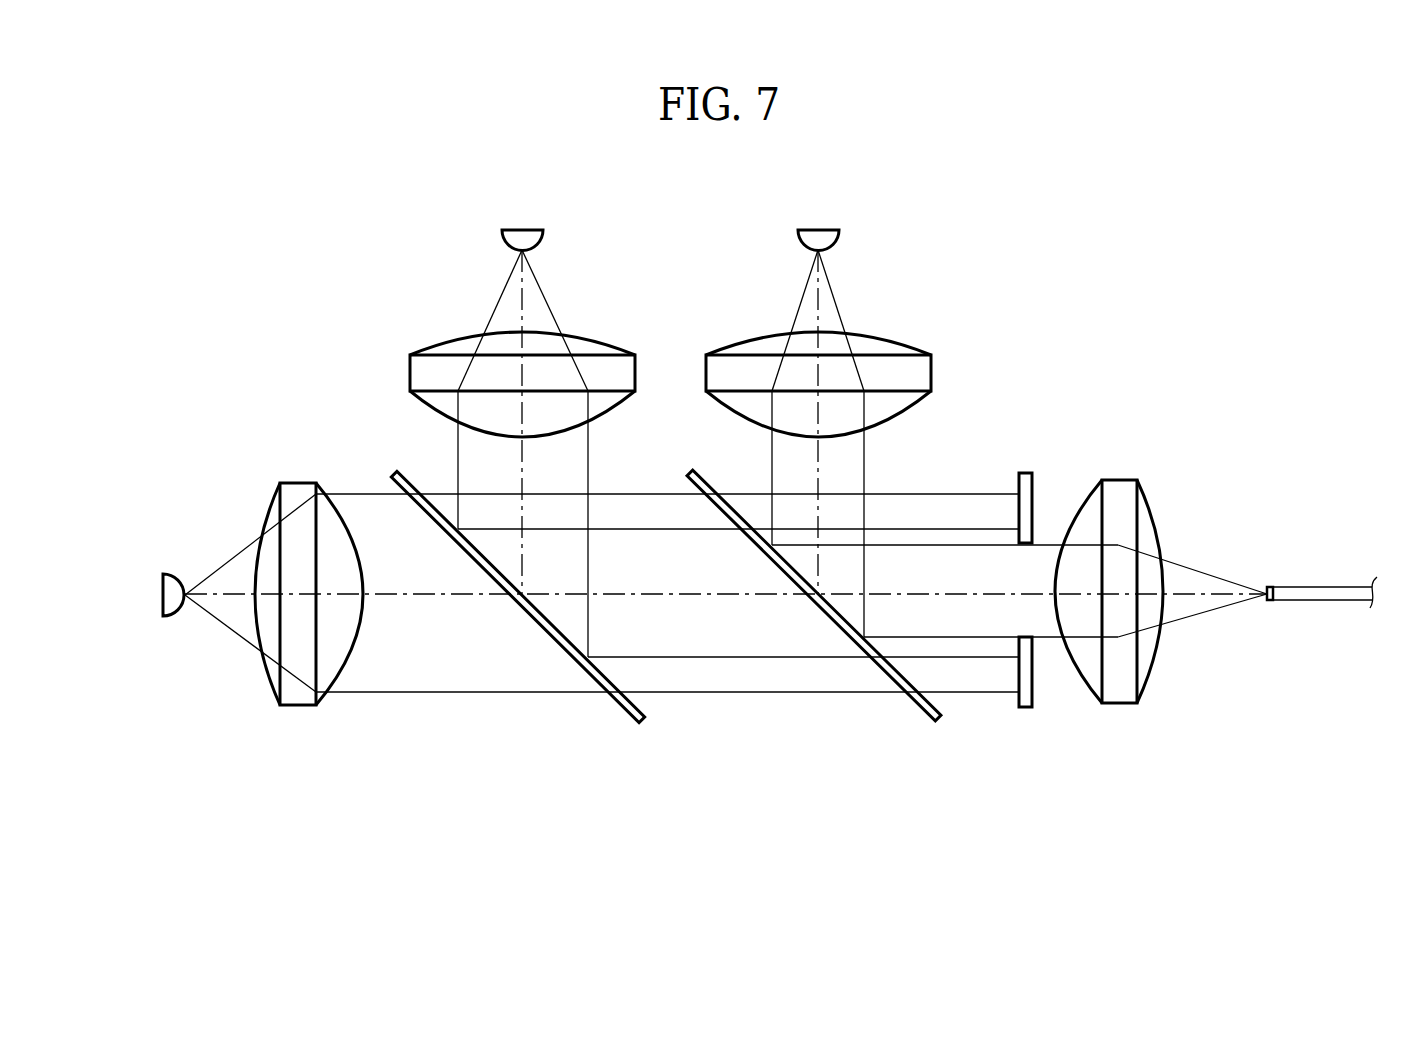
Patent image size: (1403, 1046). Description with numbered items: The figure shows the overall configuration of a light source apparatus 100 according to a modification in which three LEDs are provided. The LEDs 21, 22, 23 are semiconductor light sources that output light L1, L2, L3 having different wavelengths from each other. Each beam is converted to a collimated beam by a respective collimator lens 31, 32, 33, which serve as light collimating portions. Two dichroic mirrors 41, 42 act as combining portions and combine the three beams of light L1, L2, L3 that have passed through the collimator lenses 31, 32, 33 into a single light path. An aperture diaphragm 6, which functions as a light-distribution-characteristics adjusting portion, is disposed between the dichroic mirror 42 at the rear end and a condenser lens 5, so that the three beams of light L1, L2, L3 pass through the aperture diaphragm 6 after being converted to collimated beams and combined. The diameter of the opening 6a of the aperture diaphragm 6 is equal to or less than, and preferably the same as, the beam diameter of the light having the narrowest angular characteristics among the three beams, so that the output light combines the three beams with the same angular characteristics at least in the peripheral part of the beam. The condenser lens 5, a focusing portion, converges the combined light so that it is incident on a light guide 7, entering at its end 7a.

The light source apparatus 100 is at (1165, 296).
The LED 21 is at (170, 572).
The LED 22 is at (502, 237).
The LED 23 is at (839, 237).
The light L1 is at (231, 636).
The light L2 is at (495, 298).
The light L3 is at (845, 298).
The collimator lens 31 is at (299, 707).
The collimator lens 32 is at (410, 372).
The collimator lens 33 is at (931, 372).
The dichroic mirror 41 is at (622, 723).
The dichroic mirror 42 is at (918, 721).
The condenser lens 5 is at (1119, 705).
The aperture diaphragm 6 is at (1033, 490).
The opening 6a is at (1025, 546).
The light guide 7 is at (1329, 602).
The incident end of optical fiber 7a is at (1267, 602).